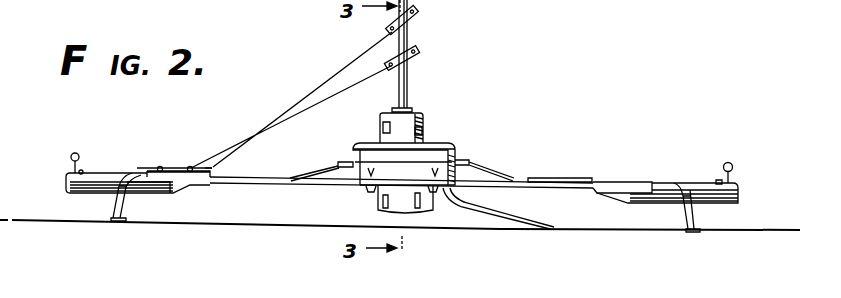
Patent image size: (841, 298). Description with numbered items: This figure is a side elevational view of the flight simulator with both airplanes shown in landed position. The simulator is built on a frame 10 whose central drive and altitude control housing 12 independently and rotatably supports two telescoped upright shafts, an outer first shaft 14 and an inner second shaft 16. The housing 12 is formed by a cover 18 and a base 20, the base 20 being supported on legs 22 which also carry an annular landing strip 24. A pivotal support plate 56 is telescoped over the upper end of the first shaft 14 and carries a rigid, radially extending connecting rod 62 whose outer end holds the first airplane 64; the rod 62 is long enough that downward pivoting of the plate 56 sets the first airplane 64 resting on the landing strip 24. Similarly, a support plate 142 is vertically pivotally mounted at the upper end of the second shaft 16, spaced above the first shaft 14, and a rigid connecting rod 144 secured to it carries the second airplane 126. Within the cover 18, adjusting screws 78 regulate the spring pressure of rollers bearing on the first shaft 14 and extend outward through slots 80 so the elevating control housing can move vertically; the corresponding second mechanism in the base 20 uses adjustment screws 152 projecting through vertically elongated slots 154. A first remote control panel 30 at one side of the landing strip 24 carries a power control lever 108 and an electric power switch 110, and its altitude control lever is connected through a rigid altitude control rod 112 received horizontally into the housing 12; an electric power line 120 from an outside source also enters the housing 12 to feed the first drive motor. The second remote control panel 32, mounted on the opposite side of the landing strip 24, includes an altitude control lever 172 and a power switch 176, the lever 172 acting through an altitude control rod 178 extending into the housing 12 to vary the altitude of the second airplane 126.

The frame 10 is at (262, 200).
The central drive and altitude control housing 12 is at (456, 151).
The first shaft 14 is at (408, 90).
The second shaft 16 is at (408, 39).
The cover 18 is at (382, 120).
The base 20 is at (402, 210).
The legs 22 is at (122, 206).
The annular landing strip 24 is at (621, 180).
The first remote control panel 30 is at (741, 200).
The second remote control panel 32 is at (67, 189).
The pivotal support plate 56 is at (419, 57).
The connecting rod 62 is at (355, 84).
The first airplane 64 is at (150, 167).
The adjusting screw 78 is at (382, 134).
The slots 80 is at (424, 122).
The power control lever 108 is at (734, 168).
The electric power switch 110 is at (717, 180).
The altitude control rod 112 is at (498, 172).
The electric power line 120 is at (496, 213).
The second airplane 126 is at (213, 166).
The support plate 142 is at (416, 15).
The connecting rod 144 is at (348, 59).
The adjustment screws 152 is at (378, 206).
The slots 154 is at (381, 198).
The altitude control lever 172 is at (71, 157).
The power switch 176 is at (84, 171).
The altitude control rod 178 is at (316, 176).